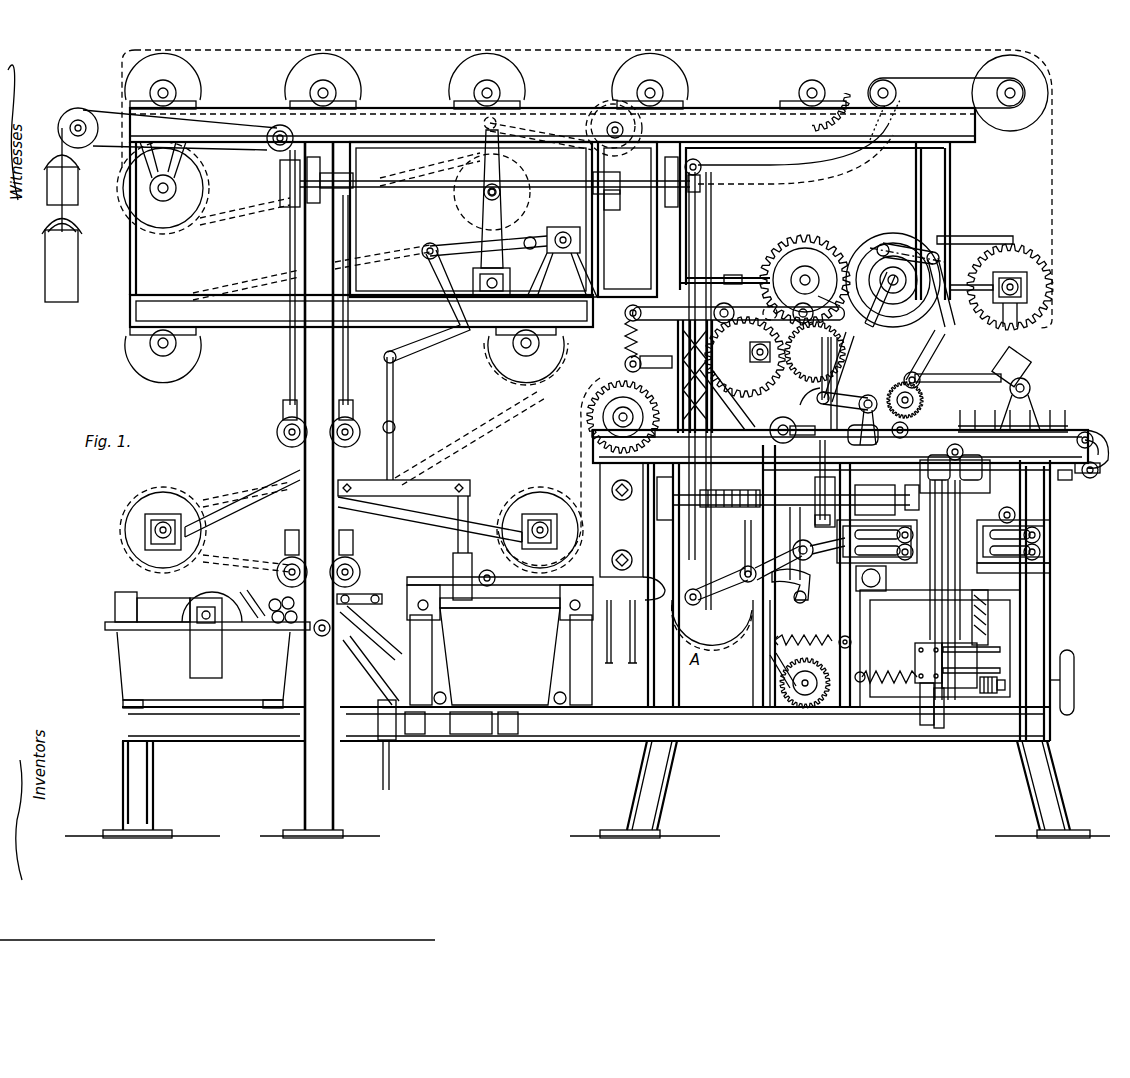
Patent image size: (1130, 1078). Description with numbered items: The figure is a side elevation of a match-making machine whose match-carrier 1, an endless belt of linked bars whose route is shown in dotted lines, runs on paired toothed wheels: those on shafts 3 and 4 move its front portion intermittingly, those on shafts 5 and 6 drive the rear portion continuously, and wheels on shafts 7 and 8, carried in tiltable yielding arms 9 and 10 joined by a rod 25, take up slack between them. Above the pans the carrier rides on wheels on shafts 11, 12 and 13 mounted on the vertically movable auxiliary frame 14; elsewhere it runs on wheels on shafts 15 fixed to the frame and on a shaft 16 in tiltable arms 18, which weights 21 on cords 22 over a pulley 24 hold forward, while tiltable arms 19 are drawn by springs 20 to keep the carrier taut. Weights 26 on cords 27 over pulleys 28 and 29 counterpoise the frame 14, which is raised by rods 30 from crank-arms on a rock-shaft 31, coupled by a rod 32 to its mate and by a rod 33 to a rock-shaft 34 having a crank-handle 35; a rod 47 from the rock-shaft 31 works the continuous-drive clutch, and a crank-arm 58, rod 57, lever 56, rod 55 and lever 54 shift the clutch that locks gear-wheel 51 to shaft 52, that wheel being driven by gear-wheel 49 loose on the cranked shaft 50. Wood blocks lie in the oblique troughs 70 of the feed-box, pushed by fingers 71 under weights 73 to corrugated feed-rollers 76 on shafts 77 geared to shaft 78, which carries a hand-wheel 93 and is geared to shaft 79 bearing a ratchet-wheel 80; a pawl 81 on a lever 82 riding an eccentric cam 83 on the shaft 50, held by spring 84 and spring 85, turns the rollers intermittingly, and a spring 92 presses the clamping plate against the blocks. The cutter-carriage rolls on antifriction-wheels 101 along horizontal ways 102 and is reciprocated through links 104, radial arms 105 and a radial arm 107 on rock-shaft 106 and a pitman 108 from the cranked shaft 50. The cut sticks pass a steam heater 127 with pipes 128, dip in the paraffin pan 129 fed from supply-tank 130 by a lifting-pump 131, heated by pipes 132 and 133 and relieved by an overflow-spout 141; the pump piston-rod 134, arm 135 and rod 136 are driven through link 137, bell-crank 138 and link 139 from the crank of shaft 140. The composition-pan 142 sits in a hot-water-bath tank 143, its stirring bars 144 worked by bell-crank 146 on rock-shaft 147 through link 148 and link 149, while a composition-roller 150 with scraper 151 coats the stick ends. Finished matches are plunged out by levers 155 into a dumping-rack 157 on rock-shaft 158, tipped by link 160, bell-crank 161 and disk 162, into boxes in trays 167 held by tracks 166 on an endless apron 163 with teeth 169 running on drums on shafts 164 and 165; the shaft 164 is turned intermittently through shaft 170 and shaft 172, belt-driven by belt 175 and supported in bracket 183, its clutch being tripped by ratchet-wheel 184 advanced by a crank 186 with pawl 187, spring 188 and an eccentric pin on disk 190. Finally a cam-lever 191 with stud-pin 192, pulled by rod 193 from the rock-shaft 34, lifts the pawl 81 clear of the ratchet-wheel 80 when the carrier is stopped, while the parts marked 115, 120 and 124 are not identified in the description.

The machine outline 1 is at (1050, 175).
The shaft bearing 3 is at (1021, 287).
The guide 4 is at (866, 588).
The gear 5 is at (812, 88).
The sprocket wheel 6 is at (624, 427).
The pulley 7 is at (1010, 108).
The wheel 8 is at (712, 625).
The belt 9 is at (946, 93).
The lever 10 is at (737, 585).
The pulley 11 is at (540, 520).
The pulley 12 is at (162, 520).
The guide pulleys 13 is at (400, 430).
The cross bar 14 is at (404, 487).
The belt pulleys 15 is at (164, 88).
The pivot 16 is at (498, 196).
The pendulum arm 18 is at (480, 210).
The arm 19 is at (935, 370).
The gear 20 is at (902, 385).
The weight 21 is at (79, 184).
The pulley 22 is at (598, 138).
The pulley 24 is at (615, 142).
The rod 25 is at (698, 222).
The weight 26 is at (79, 262).
The belt 27 is at (240, 133).
The pulley 28 is at (270, 146).
The pulley 29 is at (90, 140).
The rod 30 is at (349, 236).
The shaft 31 is at (556, 181).
The collar 32 is at (280, 175).
The rod 33 is at (712, 240).
The roller 34 is at (742, 488).
The block 35 is at (905, 497).
The bracket 47 is at (612, 210).
The gear 49 is at (802, 236).
The hub 50 is at (805, 274).
The gear 51 is at (745, 357).
The roller 52 is at (770, 352).
The gear 54 is at (815, 352).
The rack 55 is at (822, 366).
The bar 56 is at (830, 380).
The rod 57 is at (822, 464).
The collar 58 is at (818, 488).
The block 70 is at (958, 690).
The bars 71 is at (1001, 650).
The slide 73 is at (912, 708).
The rack 76 is at (989, 612).
The columns 77 is at (945, 578).
The pinion 78 is at (1000, 692).
The ratchet wheel 79 is at (805, 698).
The pawl 80 is at (780, 688).
The post 81 is at (756, 655).
The bar 82 is at (750, 307).
The link 83 is at (820, 297).
The spring 84 is at (623, 348).
The spring 85 is at (845, 648).
The spring 92 is at (885, 684).
The handle 93 is at (1066, 716).
The boxes 101 is at (1052, 540).
The plate 102 is at (985, 565).
The link 104 is at (826, 548).
The rod 105 is at (805, 500).
The roller 106 is at (784, 438).
The lever 107 is at (740, 396).
The arm 108 is at (652, 356).
The rods 115 is at (946, 522).
The roller 120 is at (1014, 514).
The stop 124 is at (735, 273).
The post 127 is at (632, 531).
The rods 128 is at (620, 666).
The plate 129 is at (500, 597).
The hopper 130 is at (501, 656).
The slide 131 is at (500, 610).
The beam 132 is at (570, 702).
The roller 133 is at (423, 600).
The rod 134 is at (470, 503).
The rod 135 is at (447, 478).
The arm 136 is at (394, 560).
The rod 137 is at (394, 395).
The lever 138 is at (440, 343).
The link 139 is at (470, 250).
The bracket 140 is at (563, 232).
The roller 141 is at (495, 580).
The table 142 is at (107, 622).
The trough 143 is at (203, 653).
The block 144 is at (163, 606).
The link 146 is at (348, 630).
The roller 147 is at (322, 638).
The bar 148 is at (359, 591).
The rod 149 is at (382, 692).
The wheel 150 is at (215, 590).
The arm 151 is at (247, 590).
The gear 155 is at (985, 238).
The block 157 is at (1026, 362).
The joint 158 is at (1031, 388).
The bar 160 is at (975, 374).
The link 161 is at (950, 334).
The cam disk 162 is at (876, 238).
The plate 163 is at (1080, 482).
The roller 164 is at (963, 452).
The head 165 is at (1097, 428).
The roller 166 is at (1095, 478).
The pins 167 is at (1066, 412).
The block 169 is at (1063, 481).
The cylinders 170 is at (906, 435).
The yoke 172 is at (855, 444).
The crank 175 is at (882, 300).
The roller 183 is at (898, 440).
The link 184 is at (878, 410).
The link 186 is at (850, 400).
The arm 187 is at (815, 392).
The link 188 is at (840, 378).
The arm 190 is at (878, 251).
The lever 191 is at (800, 580).
The roller 192 is at (793, 549).
The lever 193 is at (745, 535).